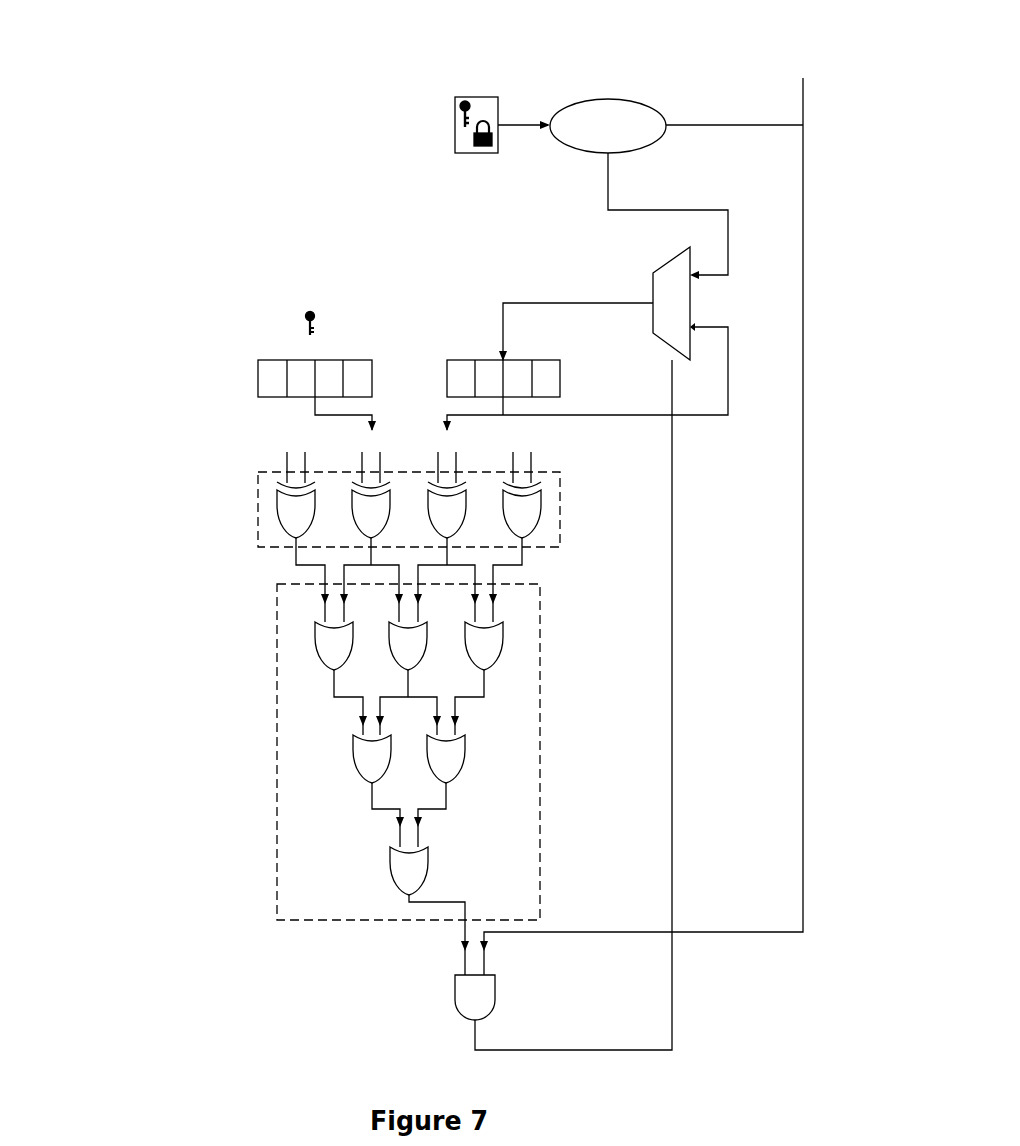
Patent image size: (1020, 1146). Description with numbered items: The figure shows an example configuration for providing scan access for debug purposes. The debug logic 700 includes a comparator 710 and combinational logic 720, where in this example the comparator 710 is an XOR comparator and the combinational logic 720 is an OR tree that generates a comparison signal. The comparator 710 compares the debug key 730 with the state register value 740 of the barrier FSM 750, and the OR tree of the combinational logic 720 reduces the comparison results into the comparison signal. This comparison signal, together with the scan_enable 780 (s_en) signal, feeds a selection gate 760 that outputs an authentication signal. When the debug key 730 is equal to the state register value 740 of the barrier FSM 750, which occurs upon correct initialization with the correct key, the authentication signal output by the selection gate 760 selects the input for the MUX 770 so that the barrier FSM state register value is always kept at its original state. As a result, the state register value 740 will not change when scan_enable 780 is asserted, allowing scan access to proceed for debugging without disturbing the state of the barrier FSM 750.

The debug logic 700 is at (104, 218).
The comparator 710 is at (263, 500).
The combinational logic 720 is at (275, 742).
The debug key 730 is at (170, 322).
The state register value 740 is at (430, 316).
The barrier FSM 750 is at (575, 101).
The selection gate 760 is at (455, 1017).
The MUX 770 is at (655, 286).
The scan_enable 780 is at (772, 45).